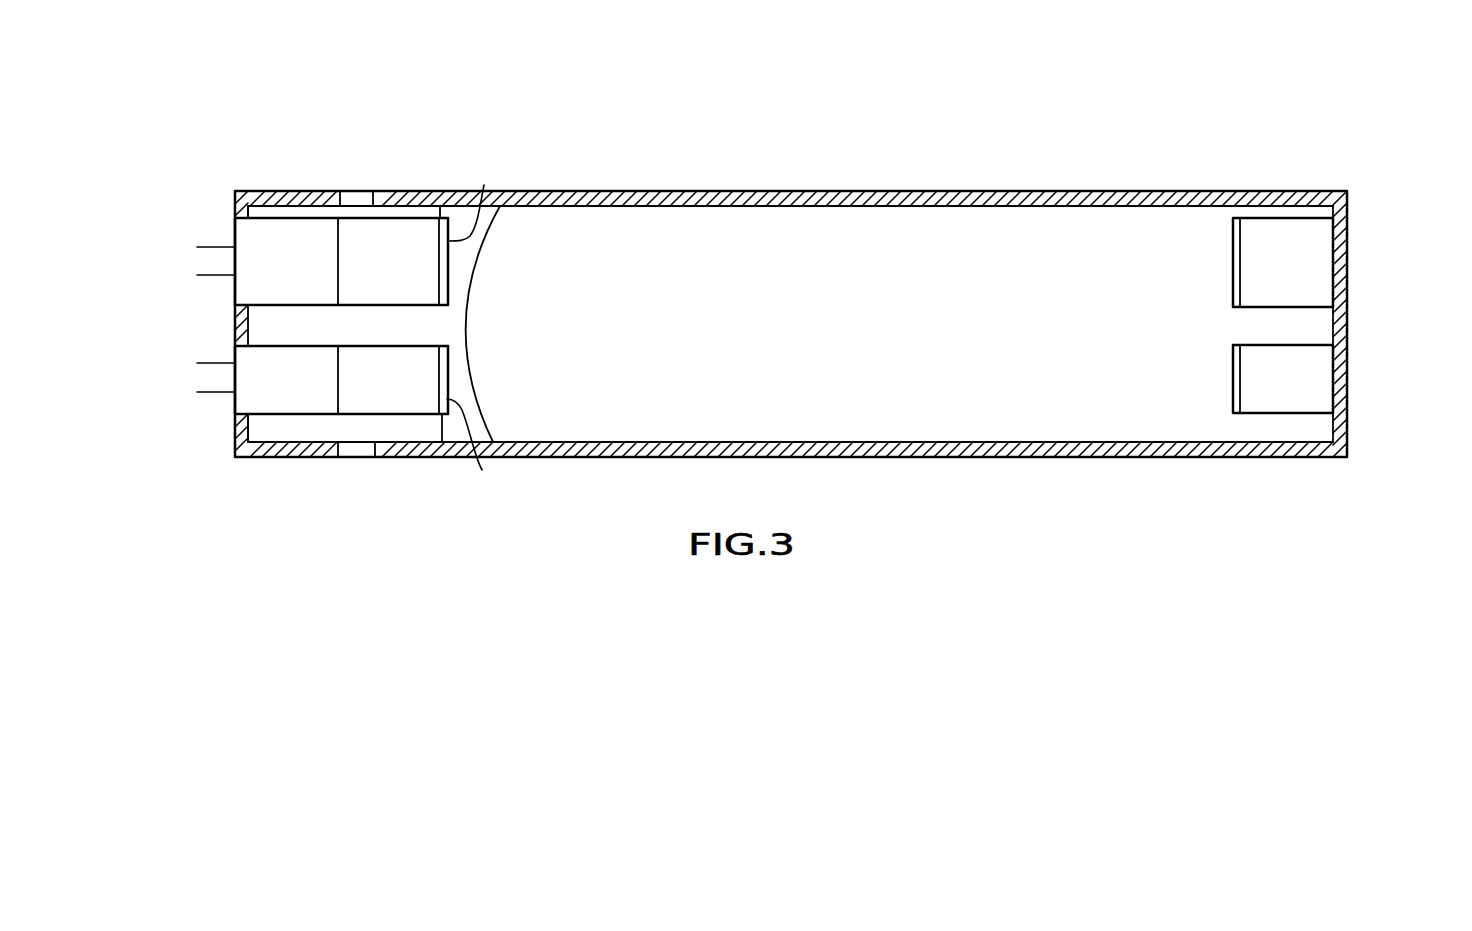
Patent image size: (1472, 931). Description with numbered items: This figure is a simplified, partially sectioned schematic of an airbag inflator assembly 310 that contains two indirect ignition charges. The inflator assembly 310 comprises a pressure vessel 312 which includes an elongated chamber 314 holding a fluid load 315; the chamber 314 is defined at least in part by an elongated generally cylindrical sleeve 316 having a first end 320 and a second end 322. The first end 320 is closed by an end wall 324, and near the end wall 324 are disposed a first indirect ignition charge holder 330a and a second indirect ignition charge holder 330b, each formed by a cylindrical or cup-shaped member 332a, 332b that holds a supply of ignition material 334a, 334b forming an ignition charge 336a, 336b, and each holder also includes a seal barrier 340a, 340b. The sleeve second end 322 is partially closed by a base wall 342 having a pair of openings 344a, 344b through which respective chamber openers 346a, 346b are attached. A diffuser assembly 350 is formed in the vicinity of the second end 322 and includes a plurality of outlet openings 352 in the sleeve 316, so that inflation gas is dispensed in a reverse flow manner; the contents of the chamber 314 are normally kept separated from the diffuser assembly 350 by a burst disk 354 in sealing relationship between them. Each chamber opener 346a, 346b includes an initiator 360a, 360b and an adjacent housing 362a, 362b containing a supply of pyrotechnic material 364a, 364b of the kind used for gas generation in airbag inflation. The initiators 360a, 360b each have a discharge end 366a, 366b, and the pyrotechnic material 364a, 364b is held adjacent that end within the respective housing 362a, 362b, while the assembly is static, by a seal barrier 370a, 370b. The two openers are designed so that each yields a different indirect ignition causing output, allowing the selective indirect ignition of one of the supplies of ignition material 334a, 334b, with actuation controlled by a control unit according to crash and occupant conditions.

The inflator assembly 310 is at (1018, 97).
The pressure vessel 312 is at (691, 197).
The elongated chamber 314 is at (855, 418).
The fluid load 315 is at (965, 418).
The elongated generally cylindrical sleeve 316 is at (1040, 197).
The first end 320 is at (1327, 168).
The second end 322 is at (237, 158).
The end wall 324 is at (1347, 425).
The first indirect ignition charge holder 330a is at (1277, 220).
The second indirect ignition charge holder 330b is at (1273, 415).
The cylindrical or cup-shaped member 332a is at (1313, 217).
The cylindrical or cup-shaped member 332b is at (1303, 346).
The supply of ignition material 334a is at (1307, 246).
The supply of ignition material 334b is at (1313, 379).
The ignition charge 336a is at (1307, 280).
The ignition charge 336b is at (1317, 397).
The seal barrier 340a is at (1232, 263).
The seal barrier 340b is at (1232, 381).
The base wall 342 is at (235, 320).
The opening 344a is at (240, 208).
The opening 344b is at (237, 423).
The chamber opener 346a is at (295, 217).
The chamber opener 346b is at (288, 418).
The diffuser assembly 350 is at (388, 190).
The outlet openings 352 is at (355, 193).
The burst disk 354 is at (467, 321).
The initiator 360a is at (317, 282).
The initiator 360b is at (322, 397).
The housing 362a is at (421, 250).
The housing 362b is at (397, 417).
The pyrotechnic material 364a is at (453, 240).
The pyrotechnic material 364b is at (415, 403).
The discharge end 366a is at (338, 240).
The discharge end 366b is at (338, 352).
The seal barrier 370a is at (484, 185).
The seal barrier 370b is at (482, 470).